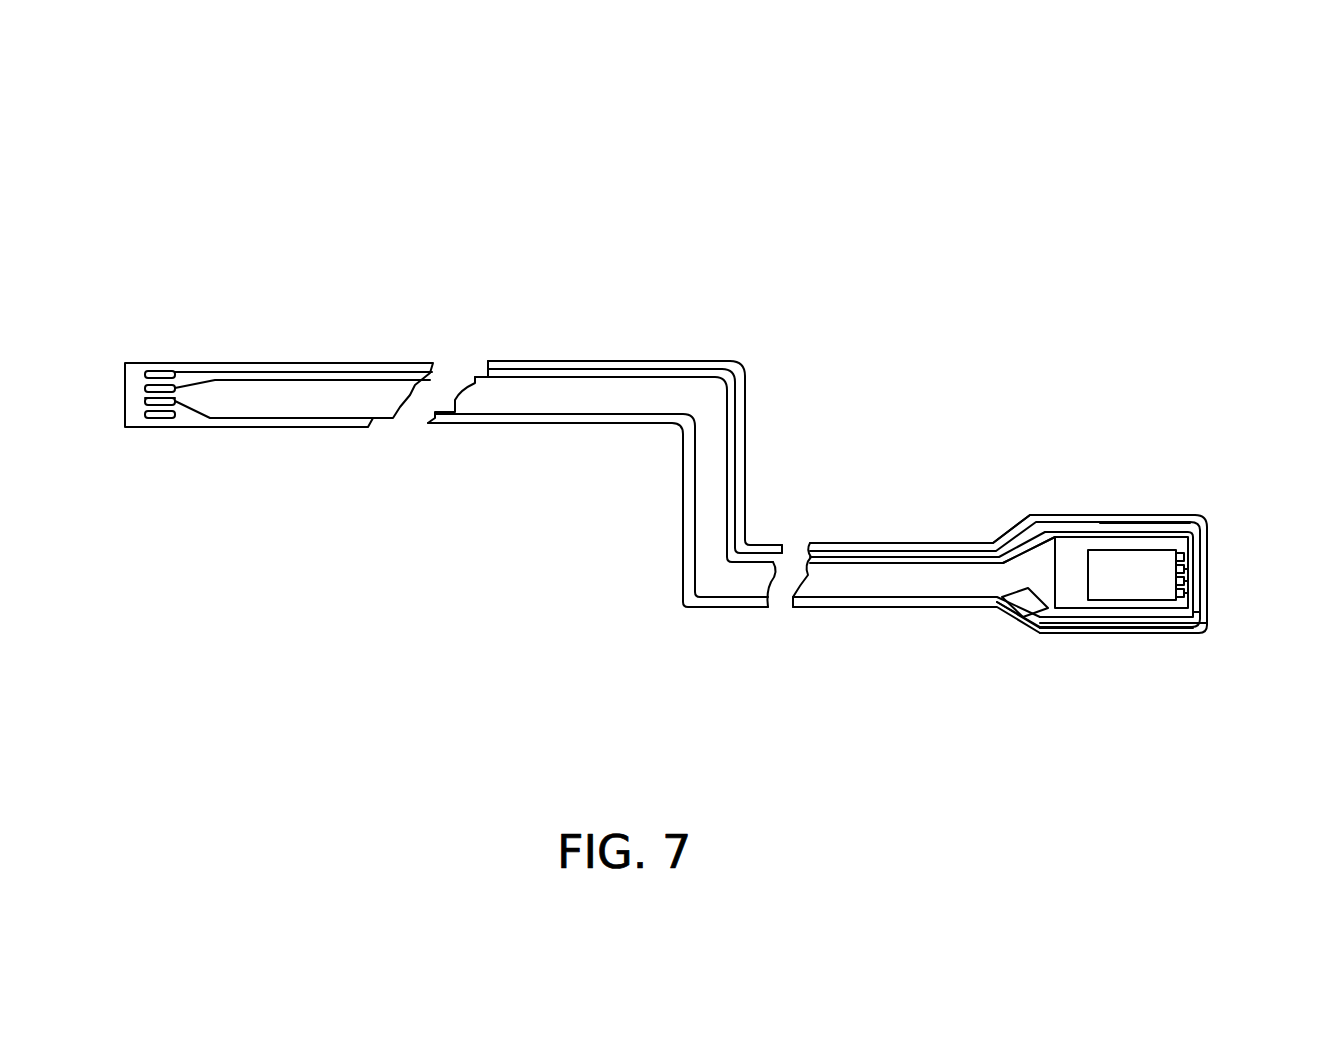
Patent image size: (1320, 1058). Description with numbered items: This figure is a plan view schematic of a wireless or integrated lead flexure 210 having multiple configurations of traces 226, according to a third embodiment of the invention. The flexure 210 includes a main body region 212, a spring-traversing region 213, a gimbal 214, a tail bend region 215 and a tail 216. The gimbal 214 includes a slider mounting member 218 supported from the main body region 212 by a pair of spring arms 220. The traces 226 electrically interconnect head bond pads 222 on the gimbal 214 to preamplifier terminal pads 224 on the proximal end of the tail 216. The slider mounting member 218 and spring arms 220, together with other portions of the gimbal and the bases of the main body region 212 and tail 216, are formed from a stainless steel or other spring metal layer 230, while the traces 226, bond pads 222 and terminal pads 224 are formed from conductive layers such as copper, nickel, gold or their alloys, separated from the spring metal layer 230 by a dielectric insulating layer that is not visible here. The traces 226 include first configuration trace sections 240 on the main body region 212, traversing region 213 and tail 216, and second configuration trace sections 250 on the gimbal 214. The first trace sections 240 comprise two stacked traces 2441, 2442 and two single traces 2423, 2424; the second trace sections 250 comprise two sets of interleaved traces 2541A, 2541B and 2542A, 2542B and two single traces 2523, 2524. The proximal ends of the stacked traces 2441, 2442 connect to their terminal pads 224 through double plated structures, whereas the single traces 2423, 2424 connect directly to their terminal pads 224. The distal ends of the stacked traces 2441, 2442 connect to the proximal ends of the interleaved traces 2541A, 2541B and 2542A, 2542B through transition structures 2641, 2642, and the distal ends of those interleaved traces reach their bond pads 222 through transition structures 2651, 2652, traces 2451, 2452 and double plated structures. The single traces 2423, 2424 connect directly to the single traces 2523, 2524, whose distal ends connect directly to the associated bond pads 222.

The integrated lead flexure 210 is at (815, 340).
The main body region 212 is at (887, 541).
The spring-traversing region 213 is at (830, 541).
The gimbal 214 is at (1110, 505).
The tail bend region 215 is at (705, 355).
The tail 216 is at (588, 328).
The slider mounting member 218 is at (1160, 633).
The spring arms 220 is at (1183, 520).
The head bond pads 222 is at (1187, 553).
The preamplifier terminal pads 224 is at (160, 368).
The traces 226 is at (840, 607).
The spring metal layer 230 is at (820, 608).
The first configuration trace sections 240 is at (565, 400).
The single trace 2423 is at (383, 363).
The single trace 2424 is at (287, 363).
The stacked trace 2441 is at (292, 420).
The stacked trace 2442 is at (190, 402).
The trace 2451 is at (1187, 577).
The trace 2452 is at (1192, 590).
The second configuration trace sections 250 is at (1038, 528).
The single trace 2523 is at (1157, 527).
The single trace 2524 is at (1088, 515).
The interleaved trace 2541A is at (1068, 632).
The interleaved trace 2541B is at (1020, 610).
The interleaved trace 2542A is at (1043, 633).
The interleaved trace 2542B is at (1040, 622).
The transition structure 2641 is at (997, 602).
The transition structure 2642 is at (1010, 548).
The transition structure 2651 is at (1200, 612).
The transition structure 2652 is at (1207, 623).